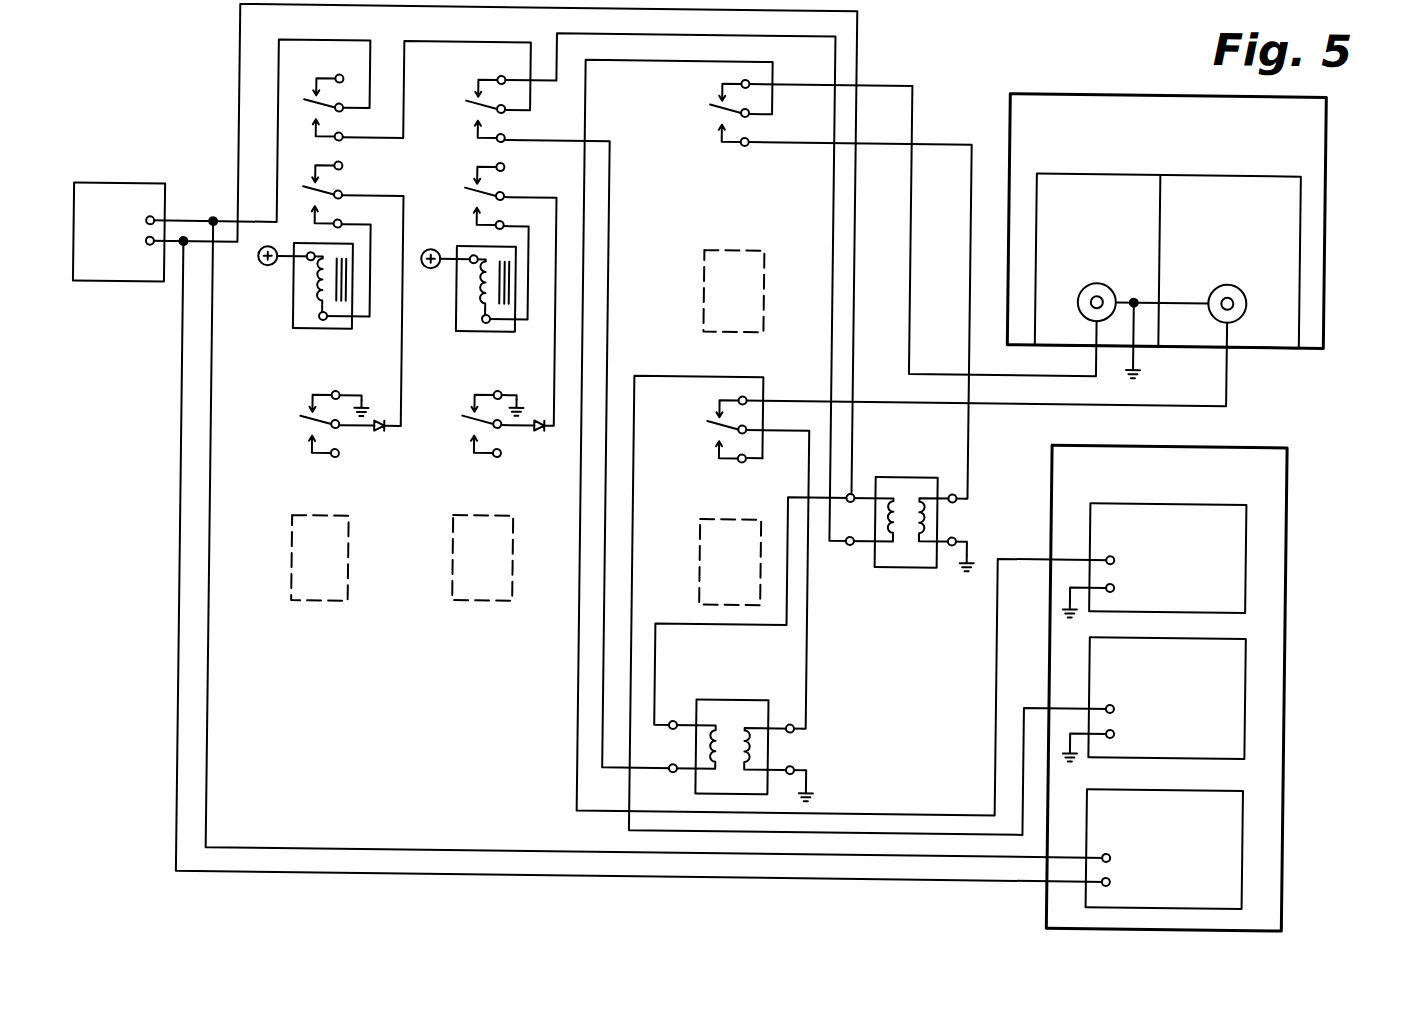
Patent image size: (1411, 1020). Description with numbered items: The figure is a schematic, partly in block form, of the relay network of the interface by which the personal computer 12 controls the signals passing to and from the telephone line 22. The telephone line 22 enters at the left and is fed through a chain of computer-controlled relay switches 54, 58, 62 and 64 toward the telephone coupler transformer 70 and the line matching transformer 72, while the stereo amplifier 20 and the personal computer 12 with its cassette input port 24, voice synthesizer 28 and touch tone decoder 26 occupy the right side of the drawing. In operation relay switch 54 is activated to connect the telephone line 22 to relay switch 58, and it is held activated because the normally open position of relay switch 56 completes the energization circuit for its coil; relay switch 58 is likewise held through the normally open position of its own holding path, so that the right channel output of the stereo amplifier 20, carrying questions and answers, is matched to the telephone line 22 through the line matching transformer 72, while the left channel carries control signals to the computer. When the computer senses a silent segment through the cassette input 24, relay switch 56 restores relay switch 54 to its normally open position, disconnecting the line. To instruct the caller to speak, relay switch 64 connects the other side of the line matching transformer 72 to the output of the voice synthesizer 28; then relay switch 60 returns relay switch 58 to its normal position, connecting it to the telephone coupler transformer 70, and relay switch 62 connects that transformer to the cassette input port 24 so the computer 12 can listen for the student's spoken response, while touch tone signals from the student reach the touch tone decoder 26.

The personal computer 12 is at (1261, 493).
The stereo amplifier 20 is at (1306, 135).
The telephone line 22 is at (114, 197).
The cassette input port 24 is at (1224, 599).
The touch tone decoder 26 is at (1223, 879).
The voice synthesizer 28 is at (1225, 729).
The relay switch 54 is at (329, 334).
The relay switch 56 is at (320, 587).
The relay switch 58 is at (491, 333).
The relay switch 60 is at (492, 583).
The relay switch 62 is at (738, 264).
The relay switch 64 is at (719, 543).
The telephone coupler transformer 70 is at (909, 553).
The line matching transformer 72 is at (764, 756).